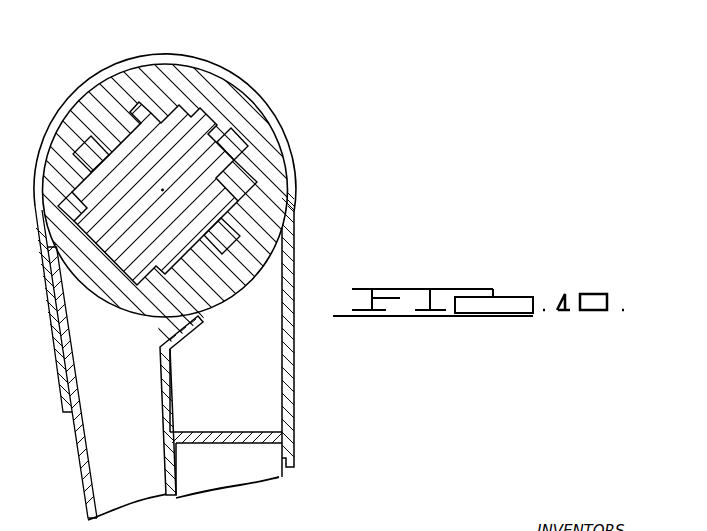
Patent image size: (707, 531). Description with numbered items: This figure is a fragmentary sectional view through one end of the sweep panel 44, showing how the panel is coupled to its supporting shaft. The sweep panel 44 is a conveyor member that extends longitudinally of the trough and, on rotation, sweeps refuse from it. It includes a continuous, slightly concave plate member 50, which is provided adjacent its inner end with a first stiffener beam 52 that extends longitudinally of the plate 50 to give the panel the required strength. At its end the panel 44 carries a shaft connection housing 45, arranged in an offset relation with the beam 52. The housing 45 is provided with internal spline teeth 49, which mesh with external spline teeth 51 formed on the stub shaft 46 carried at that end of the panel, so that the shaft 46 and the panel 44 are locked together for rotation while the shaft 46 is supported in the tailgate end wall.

The sweep panel 44 is at (297, 428).
The shaft connection housing 45 is at (170, 77).
The stub shaft 46 is at (227, 165).
The internal spline teeth 49 is at (203, 126).
The plate member 50 is at (287, 462).
The external spline teeth 51 is at (237, 140).
The first stiffener beam 52 is at (257, 360).